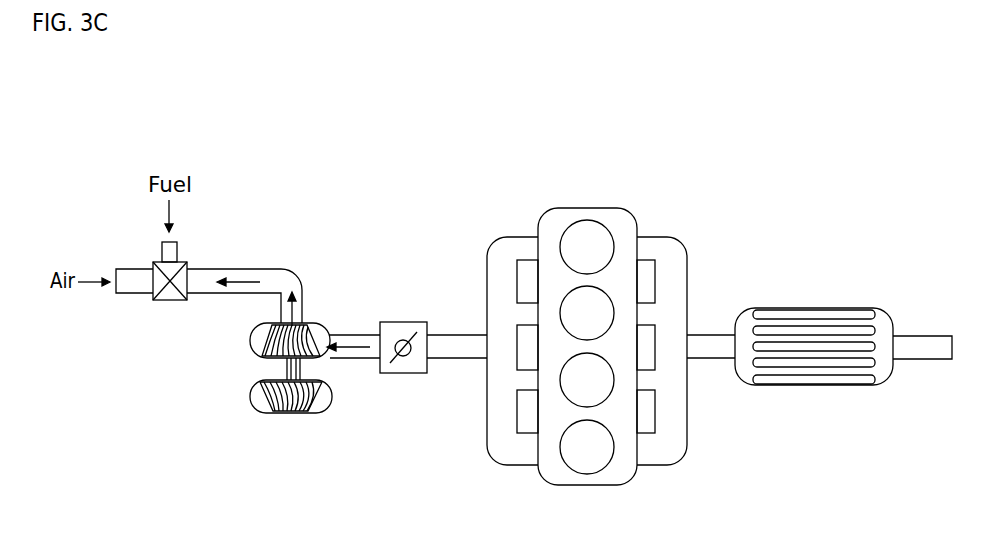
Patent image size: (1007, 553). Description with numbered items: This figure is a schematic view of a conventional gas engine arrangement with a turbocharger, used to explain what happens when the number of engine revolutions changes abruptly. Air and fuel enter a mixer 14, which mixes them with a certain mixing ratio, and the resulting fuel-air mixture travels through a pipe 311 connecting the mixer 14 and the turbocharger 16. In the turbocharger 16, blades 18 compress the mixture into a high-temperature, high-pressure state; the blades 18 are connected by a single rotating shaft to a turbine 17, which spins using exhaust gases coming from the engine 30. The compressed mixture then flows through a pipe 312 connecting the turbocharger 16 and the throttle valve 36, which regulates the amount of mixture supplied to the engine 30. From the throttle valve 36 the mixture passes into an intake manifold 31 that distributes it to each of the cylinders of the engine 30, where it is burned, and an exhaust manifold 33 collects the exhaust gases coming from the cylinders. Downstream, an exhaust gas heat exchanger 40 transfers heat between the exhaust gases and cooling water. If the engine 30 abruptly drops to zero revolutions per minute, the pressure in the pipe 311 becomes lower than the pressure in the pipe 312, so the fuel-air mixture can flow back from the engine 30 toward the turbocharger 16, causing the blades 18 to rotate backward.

The mixer 14 is at (173, 300).
The turbocharger 16 is at (254, 377).
The turbine 17 is at (293, 413).
The blades 18 is at (308, 323).
The engine 30 is at (600, 208).
The intake manifold 31 is at (510, 237).
The exhaust manifold 33 is at (648, 237).
The throttle valve 36 is at (410, 322).
The exhaust gas heat exchanger 40 is at (842, 308).
The pipe 311 is at (237, 268).
The pipe 312 is at (357, 358).